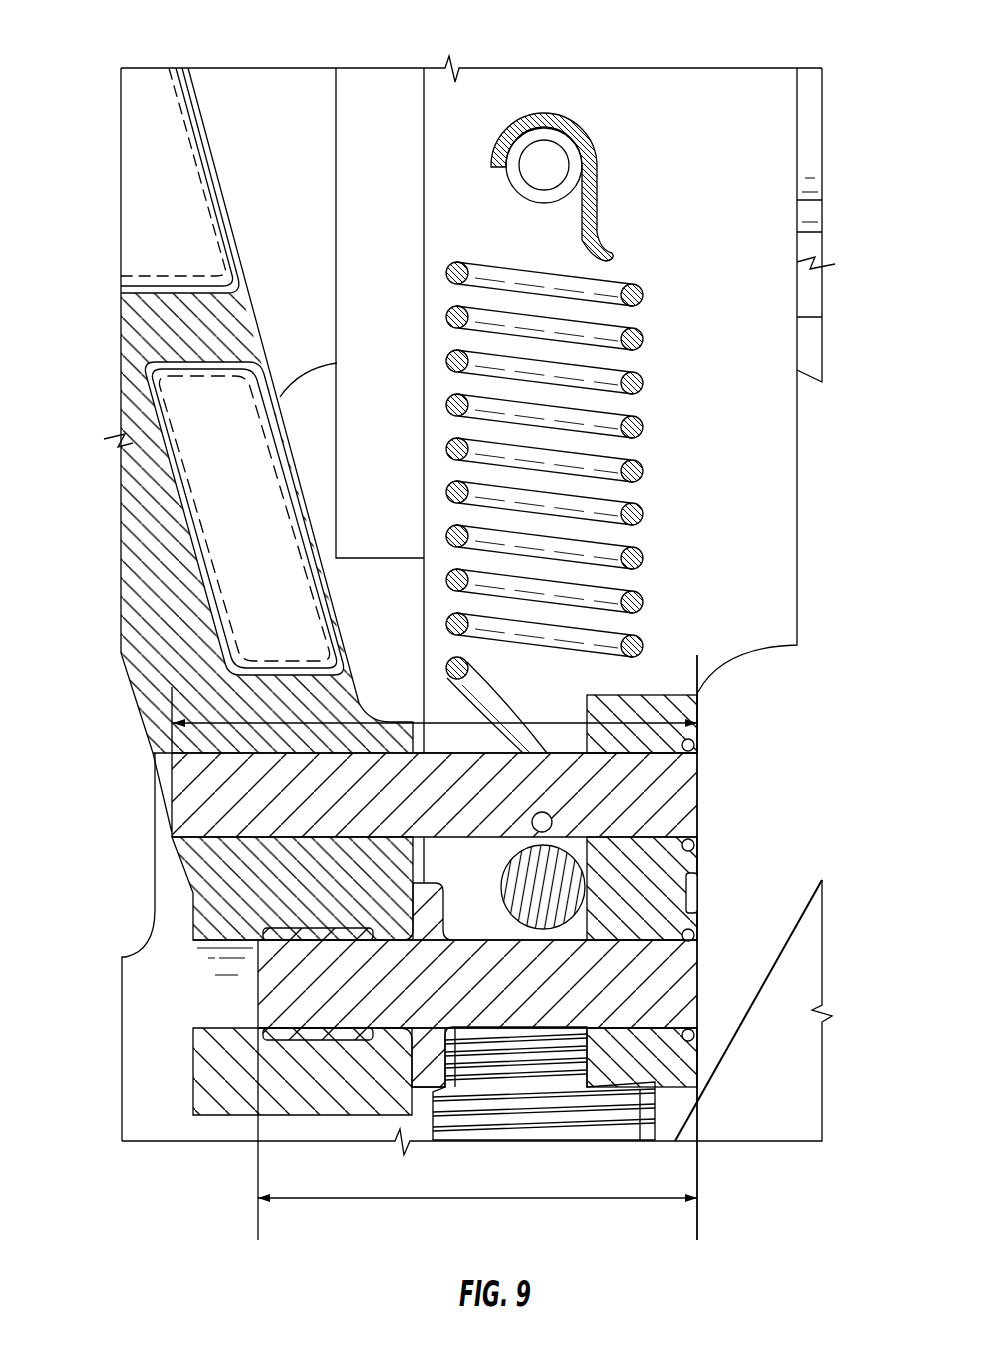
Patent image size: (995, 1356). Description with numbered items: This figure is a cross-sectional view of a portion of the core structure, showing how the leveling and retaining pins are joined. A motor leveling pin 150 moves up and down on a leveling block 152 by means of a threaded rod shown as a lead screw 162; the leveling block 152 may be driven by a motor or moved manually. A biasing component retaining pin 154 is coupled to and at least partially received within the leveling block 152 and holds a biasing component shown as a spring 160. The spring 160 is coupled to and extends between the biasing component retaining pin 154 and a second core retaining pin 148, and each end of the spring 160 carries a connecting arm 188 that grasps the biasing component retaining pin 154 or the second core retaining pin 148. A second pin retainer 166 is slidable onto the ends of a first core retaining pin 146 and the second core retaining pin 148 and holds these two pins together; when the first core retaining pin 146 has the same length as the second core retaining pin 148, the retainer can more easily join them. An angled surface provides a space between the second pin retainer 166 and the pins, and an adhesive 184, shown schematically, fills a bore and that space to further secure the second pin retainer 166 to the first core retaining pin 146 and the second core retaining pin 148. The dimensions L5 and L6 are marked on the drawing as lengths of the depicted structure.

The first core retaining pin 146 is at (287, 1007).
The second core retaining pin 148 is at (240, 790).
The motor leveling pin 150 is at (523, 883).
The leveling block 152 is at (389, 138).
The biasing component retaining pin 154 is at (541, 176).
The spring 160 is at (655, 422).
The lead screw 162 is at (543, 1103).
The second pin retainer 166 is at (718, 873).
The adhesive 184 is at (696, 845).
The connecting arm 188 is at (572, 128).
The length L5 is at (398, 1200).
The length L6 is at (437, 722).